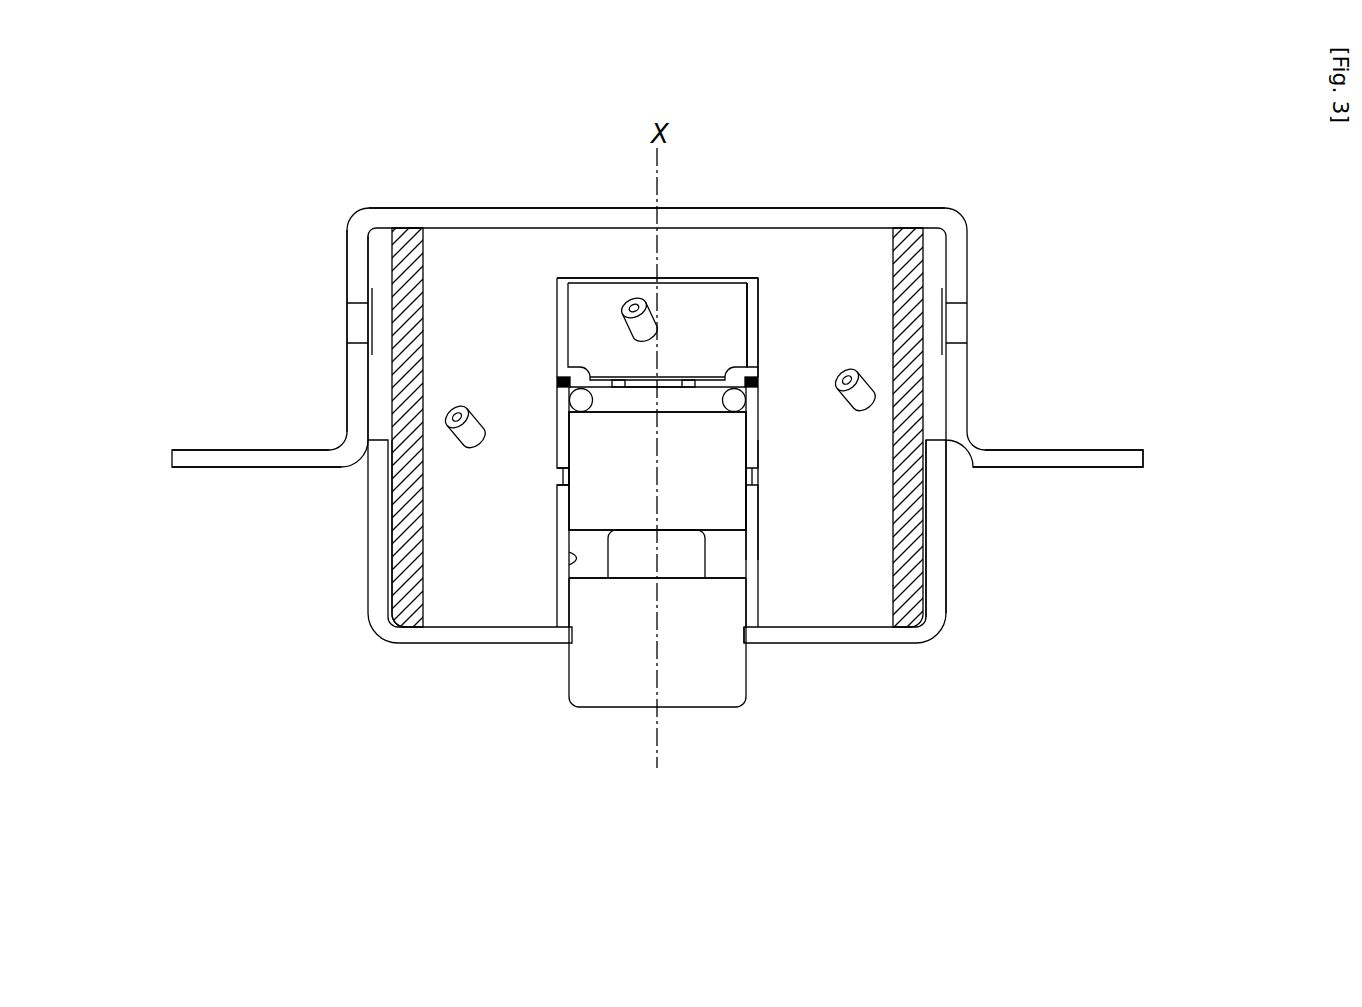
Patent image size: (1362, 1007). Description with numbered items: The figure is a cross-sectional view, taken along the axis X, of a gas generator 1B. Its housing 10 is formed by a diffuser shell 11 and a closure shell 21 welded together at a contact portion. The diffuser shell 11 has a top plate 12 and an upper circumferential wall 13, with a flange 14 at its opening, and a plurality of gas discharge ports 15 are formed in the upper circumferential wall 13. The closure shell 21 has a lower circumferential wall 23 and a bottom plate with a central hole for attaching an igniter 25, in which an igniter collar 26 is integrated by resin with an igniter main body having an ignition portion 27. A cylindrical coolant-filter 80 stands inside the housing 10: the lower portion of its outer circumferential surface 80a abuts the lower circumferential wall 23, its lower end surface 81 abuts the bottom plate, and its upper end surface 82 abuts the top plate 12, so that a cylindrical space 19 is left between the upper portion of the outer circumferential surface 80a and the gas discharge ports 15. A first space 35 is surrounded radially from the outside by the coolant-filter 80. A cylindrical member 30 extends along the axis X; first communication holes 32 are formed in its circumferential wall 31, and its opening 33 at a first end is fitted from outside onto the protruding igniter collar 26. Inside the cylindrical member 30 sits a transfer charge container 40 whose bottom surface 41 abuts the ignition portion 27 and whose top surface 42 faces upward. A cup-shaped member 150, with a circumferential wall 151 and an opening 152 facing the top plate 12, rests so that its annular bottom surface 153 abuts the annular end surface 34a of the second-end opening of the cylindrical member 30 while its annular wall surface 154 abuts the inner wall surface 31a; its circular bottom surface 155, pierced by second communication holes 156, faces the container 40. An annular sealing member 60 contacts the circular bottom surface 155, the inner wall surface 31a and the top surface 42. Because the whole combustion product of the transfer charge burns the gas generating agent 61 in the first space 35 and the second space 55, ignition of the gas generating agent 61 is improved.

The gas generator 1B is at (514, 203).
The housing 10 is at (1203, 409).
The diffuser shell 11 is at (980, 399).
The top plate 12 is at (812, 208).
The upper circumferential wall 13 is at (970, 268).
The flange 14 is at (195, 450).
The gas discharge ports 15 is at (958, 322).
The cylindrical space 19 is at (375, 405).
The closure shell 21 is at (959, 520).
The lower circumferential wall 23 is at (946, 583).
The igniter 25 is at (597, 752).
The igniter collar 26 is at (630, 684).
The ignition portion 27 is at (630, 562).
The cylindrical member 30 is at (771, 430).
The circumferential wall 31 is at (758, 520).
The inner wall surface 31a is at (570, 558).
The first communication holes 32 is at (557, 476).
The opening 33 is at (745, 645).
The annular end surface 34a is at (765, 378).
The first space 35 is at (468, 339).
The transfer charge container 40 is at (592, 514).
The bottom surface 41 is at (708, 535).
The top surface 42 is at (662, 407).
The second space 55 is at (690, 319).
The annular sealing member 60 is at (748, 400).
The gas generating agent 61 is at (626, 300).
The cylindrical coolant-filter 80 is at (438, 305).
The outer circumferential surface 80a is at (388, 545).
The lower end surface 81 is at (409, 645).
The upper end surface 82 is at (408, 228).
The cup-shaped member 150 is at (772, 281).
The circumferential wall 151 is at (752, 312).
The opening 152 is at (672, 278).
The annular bottom surface 153 is at (557, 380).
The annular wall surface 154 is at (558, 386).
The circular bottom surface 155 is at (637, 390).
The second communication holes 156 is at (686, 390).